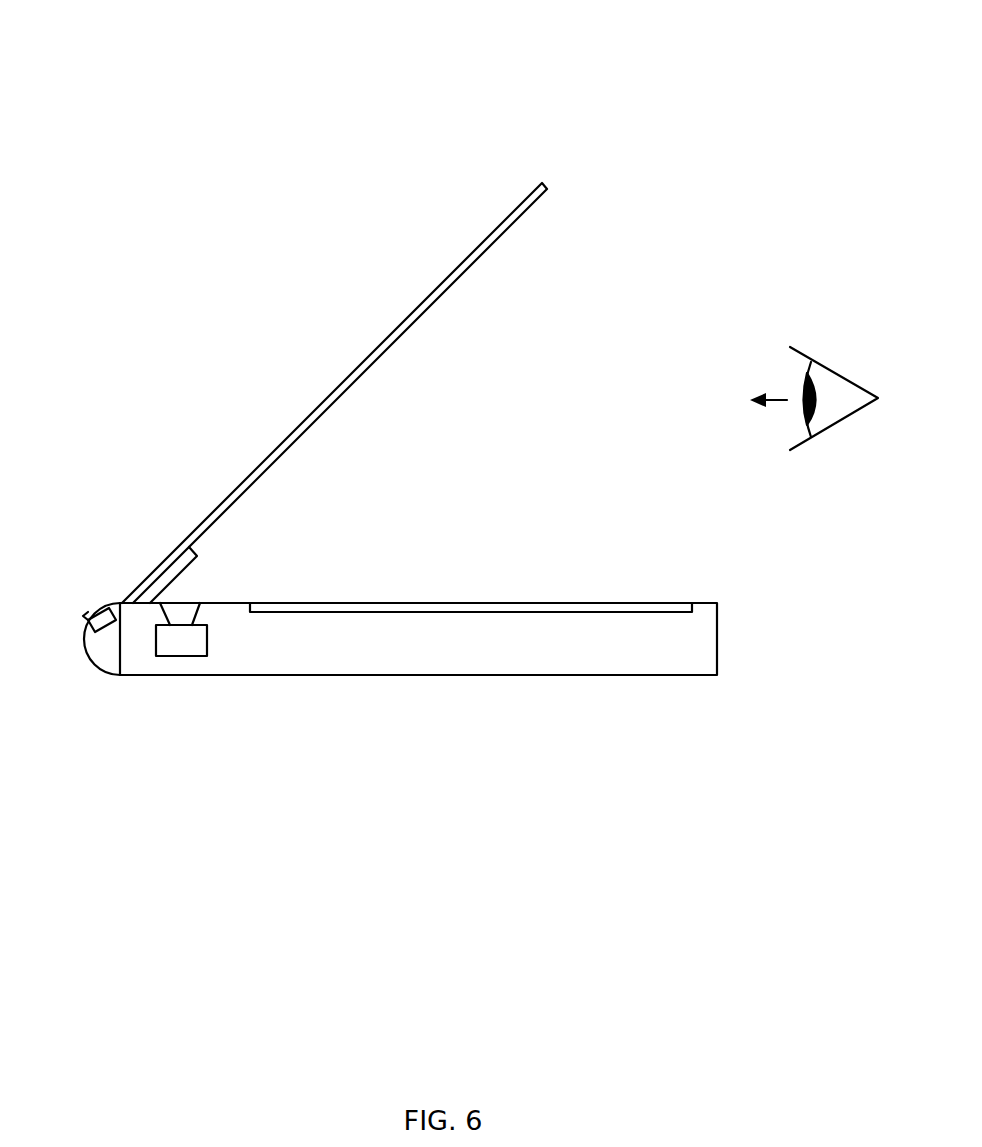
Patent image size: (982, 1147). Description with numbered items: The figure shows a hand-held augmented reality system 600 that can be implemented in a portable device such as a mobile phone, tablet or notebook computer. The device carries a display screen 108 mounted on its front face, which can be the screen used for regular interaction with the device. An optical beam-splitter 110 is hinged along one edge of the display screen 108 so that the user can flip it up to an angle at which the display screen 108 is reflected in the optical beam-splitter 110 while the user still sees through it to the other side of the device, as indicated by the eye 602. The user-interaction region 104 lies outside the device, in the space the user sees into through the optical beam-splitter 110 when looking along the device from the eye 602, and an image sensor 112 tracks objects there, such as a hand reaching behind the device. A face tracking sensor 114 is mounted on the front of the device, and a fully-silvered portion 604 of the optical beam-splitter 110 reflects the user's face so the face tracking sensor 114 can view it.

The hand-held augmented reality system 600 is at (246, 84).
The user-interaction region 104 is at (74, 300).
The display screen 108 is at (632, 603).
The optical beam-splitter 110 is at (445, 280).
The image sensor 112 is at (105, 637).
The face tracking sensor 114 is at (180, 656).
The eye 602 is at (845, 378).
The portion of the optical beam-splitter 604 is at (188, 565).